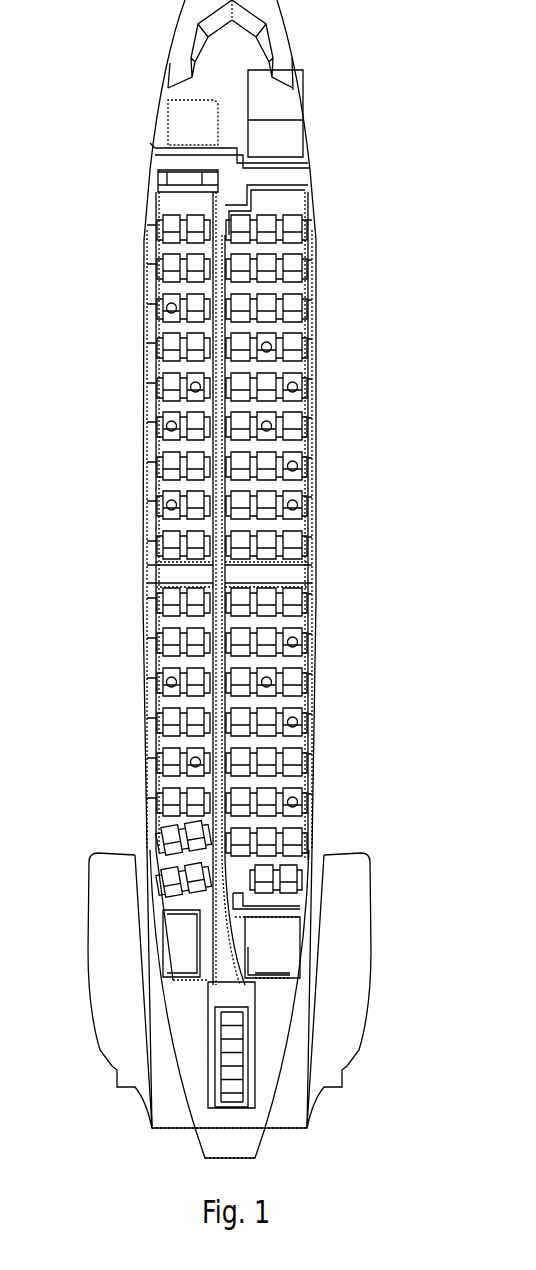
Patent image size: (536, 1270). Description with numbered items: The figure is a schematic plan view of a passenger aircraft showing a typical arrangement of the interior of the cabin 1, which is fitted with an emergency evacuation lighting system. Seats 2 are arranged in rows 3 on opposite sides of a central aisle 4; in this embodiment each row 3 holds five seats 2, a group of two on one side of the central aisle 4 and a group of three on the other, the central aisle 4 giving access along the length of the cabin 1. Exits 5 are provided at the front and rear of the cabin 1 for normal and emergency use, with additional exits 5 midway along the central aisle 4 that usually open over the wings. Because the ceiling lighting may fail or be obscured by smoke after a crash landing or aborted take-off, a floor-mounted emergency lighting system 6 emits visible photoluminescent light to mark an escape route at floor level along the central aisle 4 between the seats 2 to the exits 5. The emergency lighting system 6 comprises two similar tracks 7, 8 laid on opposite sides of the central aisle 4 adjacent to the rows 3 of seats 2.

The cabin 1 is at (316, 276).
The seats 2 is at (290, 677).
The rows 3 is at (290, 765).
The central aisle 4 is at (217, 370).
The exits 5 is at (152, 163).
The emergency lighting system 6 is at (225, 633).
The track 7 is at (228, 452).
The track 8 is at (212, 452).